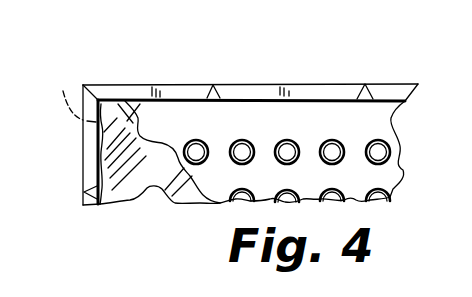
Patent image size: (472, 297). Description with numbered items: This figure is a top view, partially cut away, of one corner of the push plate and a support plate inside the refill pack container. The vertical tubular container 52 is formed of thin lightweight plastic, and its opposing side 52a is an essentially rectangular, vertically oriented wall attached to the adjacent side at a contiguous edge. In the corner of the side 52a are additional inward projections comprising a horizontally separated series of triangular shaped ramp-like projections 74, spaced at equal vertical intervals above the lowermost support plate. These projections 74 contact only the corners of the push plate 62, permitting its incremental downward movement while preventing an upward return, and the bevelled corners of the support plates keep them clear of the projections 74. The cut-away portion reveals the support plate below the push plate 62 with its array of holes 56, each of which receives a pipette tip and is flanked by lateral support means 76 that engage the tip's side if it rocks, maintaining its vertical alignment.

The tubular container 52 is at (81, 172).
The side of the tubular container 52a is at (88, 147).
The holes 56 is at (193, 140).
The push plate 62 is at (132, 187).
The triangular shaped ramp-like projections 74 is at (66, 94).
The lateral support means 76 is at (190, 139).